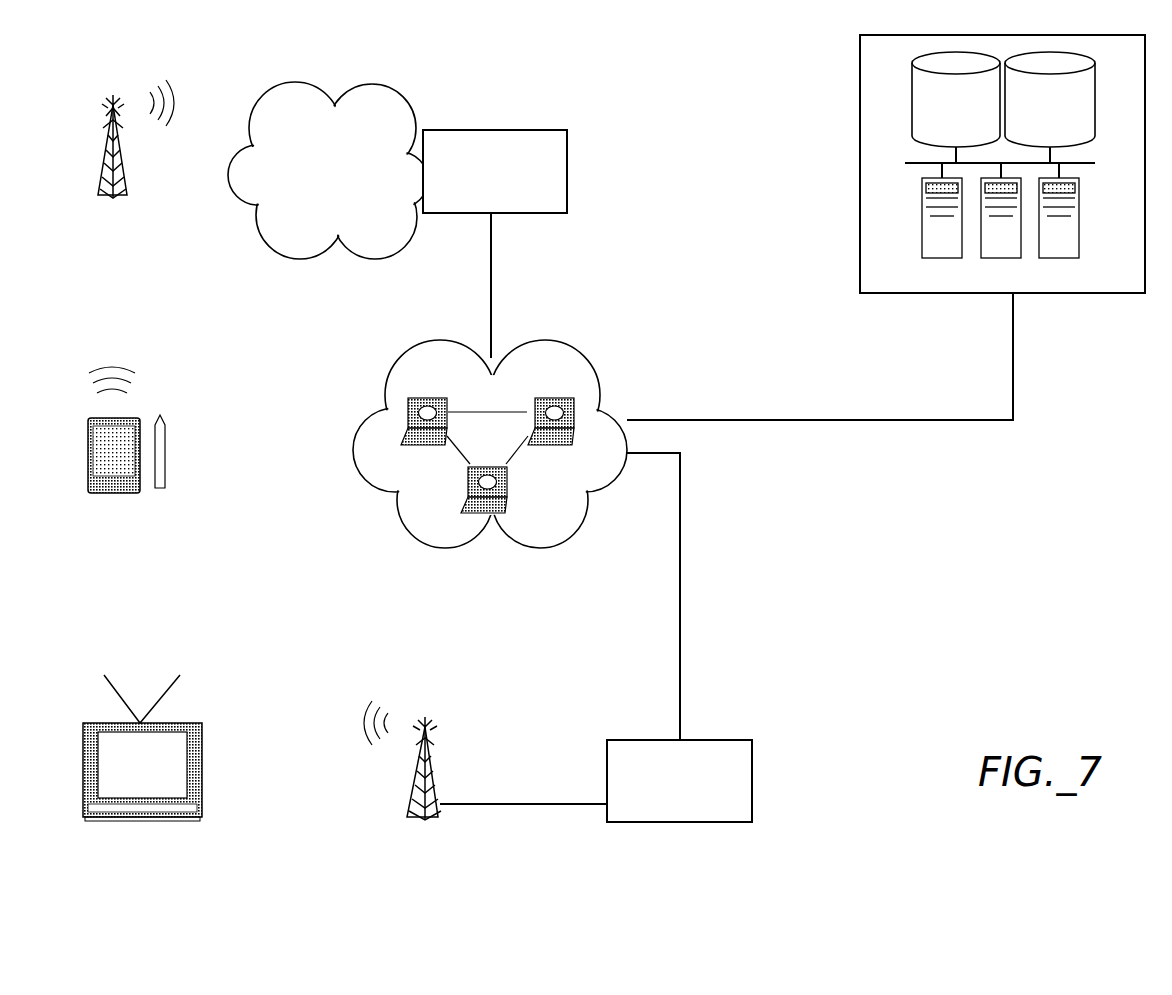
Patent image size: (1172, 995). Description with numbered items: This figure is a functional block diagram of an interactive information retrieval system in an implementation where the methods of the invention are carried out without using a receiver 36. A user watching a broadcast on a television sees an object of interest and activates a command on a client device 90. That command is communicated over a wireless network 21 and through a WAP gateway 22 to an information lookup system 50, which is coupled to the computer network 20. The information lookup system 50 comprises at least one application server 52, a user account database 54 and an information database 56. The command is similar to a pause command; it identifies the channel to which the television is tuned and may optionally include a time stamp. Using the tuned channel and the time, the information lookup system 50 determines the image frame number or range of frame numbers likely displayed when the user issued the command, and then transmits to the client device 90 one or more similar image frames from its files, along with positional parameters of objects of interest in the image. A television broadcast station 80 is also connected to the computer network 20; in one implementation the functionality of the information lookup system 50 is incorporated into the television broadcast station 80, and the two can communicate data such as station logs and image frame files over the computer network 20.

The computer network 20 is at (575, 362).
The wireless network 21 is at (405, 98).
The WAP gateway 22 is at (569, 180).
The receiver 36 is at (204, 770).
The information lookup system 50 is at (972, 164).
The application server 52 is at (1081, 215).
The user account database 54 is at (912, 118).
The information database 56 is at (1095, 118).
The television broadcast station 80 is at (754, 775).
The client device 90 is at (112, 494).